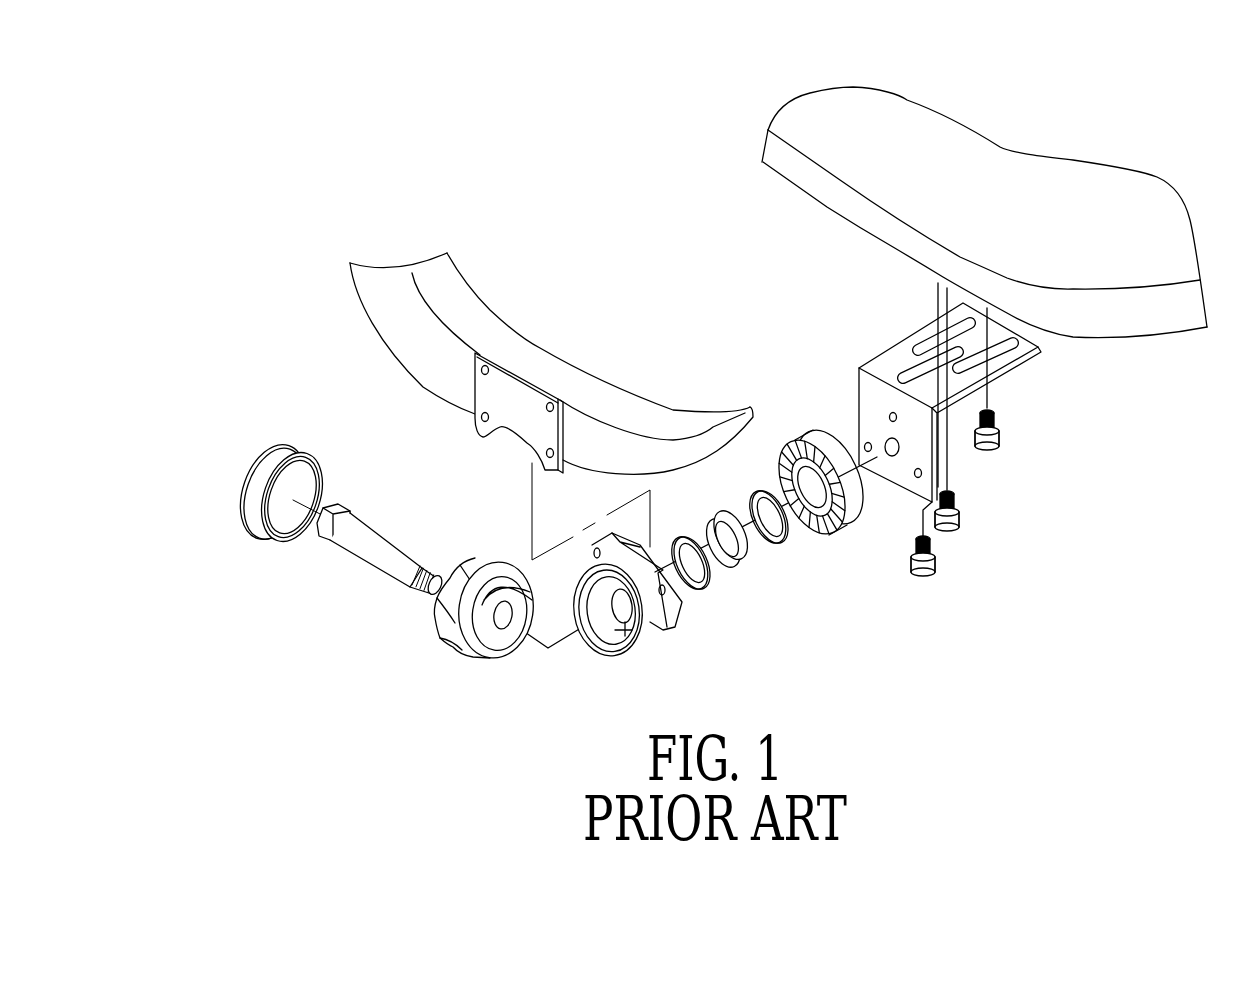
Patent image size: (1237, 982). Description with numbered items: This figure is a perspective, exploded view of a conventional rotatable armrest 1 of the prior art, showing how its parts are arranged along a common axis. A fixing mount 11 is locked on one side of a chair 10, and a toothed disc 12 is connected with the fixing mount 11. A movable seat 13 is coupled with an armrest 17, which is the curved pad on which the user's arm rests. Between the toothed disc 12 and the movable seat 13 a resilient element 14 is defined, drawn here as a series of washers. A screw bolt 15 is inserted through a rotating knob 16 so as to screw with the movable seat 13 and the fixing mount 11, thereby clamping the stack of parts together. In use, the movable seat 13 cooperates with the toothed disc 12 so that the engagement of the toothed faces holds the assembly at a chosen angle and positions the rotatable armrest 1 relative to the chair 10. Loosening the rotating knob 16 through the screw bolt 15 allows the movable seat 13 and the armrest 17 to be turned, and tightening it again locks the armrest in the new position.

The rotatable armrest 1 is at (596, 129).
The chair 10 is at (998, 148).
The fixing mount 11 is at (933, 398).
The toothed disc 12 is at (858, 513).
The movable seat 13 is at (647, 615).
The resilient element 14 is at (760, 568).
The screw bolt 15 is at (371, 547).
The rotating knob 16 is at (467, 647).
The armrest 17 is at (553, 360).